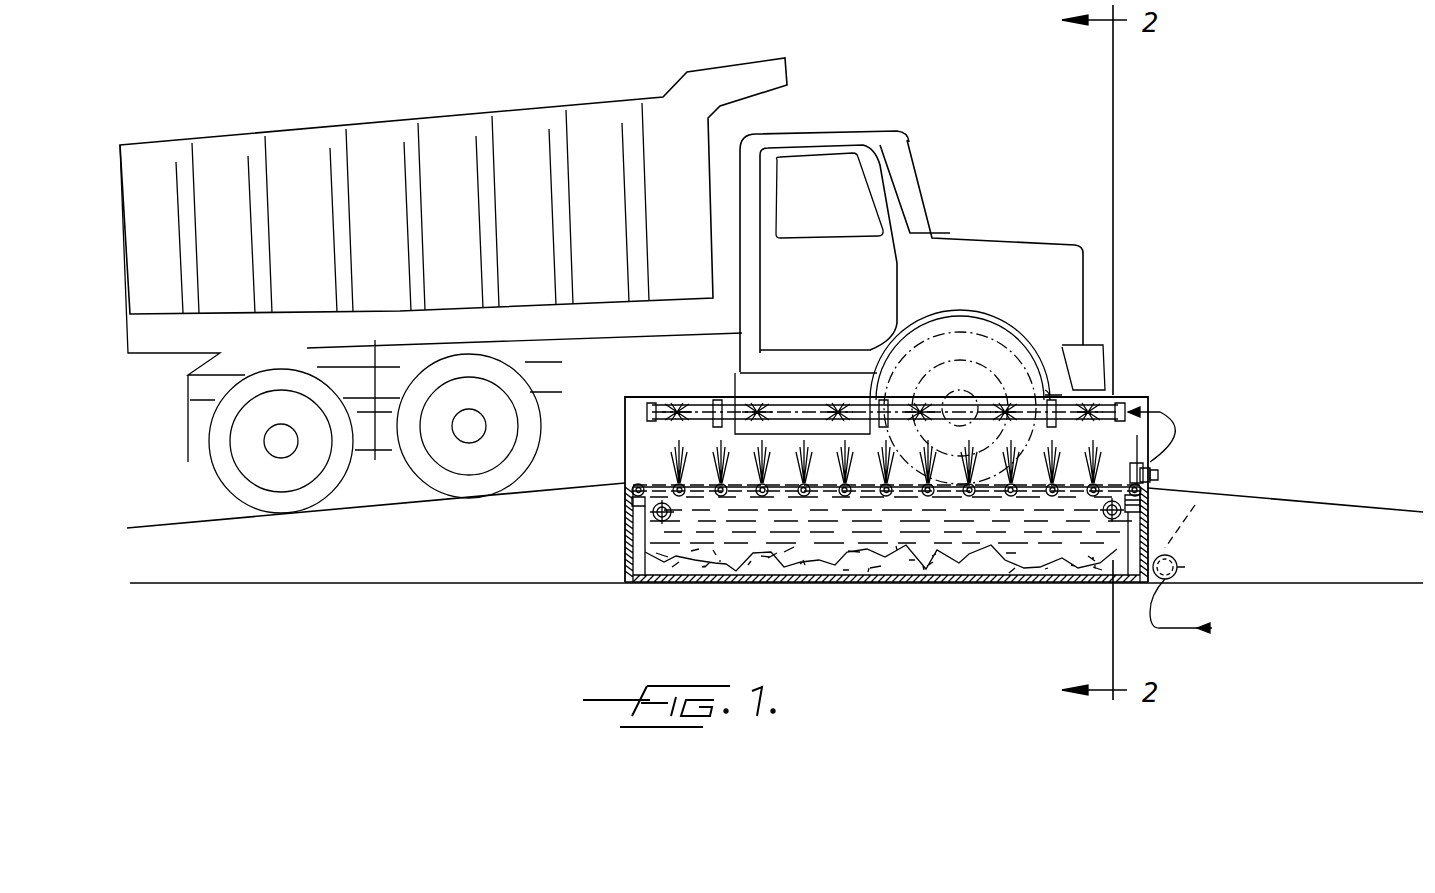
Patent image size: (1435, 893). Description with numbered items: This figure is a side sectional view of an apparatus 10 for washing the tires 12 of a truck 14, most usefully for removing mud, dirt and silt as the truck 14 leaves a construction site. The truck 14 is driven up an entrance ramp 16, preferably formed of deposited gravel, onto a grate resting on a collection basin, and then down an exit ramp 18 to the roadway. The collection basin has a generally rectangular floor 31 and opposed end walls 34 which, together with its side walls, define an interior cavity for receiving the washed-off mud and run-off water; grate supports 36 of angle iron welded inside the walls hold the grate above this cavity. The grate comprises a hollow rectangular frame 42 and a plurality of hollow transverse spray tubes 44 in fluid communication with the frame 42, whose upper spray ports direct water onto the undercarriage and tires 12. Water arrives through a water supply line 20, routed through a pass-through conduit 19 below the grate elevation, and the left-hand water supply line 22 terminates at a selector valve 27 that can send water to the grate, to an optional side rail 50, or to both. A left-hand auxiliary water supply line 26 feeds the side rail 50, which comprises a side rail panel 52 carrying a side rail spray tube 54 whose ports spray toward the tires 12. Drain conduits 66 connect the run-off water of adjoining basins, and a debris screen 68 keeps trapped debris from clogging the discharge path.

The apparatus 10 is at (1177, 295).
The tires 12 is at (285, 512).
The truck 14 is at (432, 117).
The entrance ramp 16 is at (195, 522).
The exit ramp 18 is at (1362, 505).
The pass-through conduit 19 is at (1175, 562).
The water supply line 20 is at (1210, 630).
The left-hand water supply line 22 is at (1160, 475).
The left-hand auxiliary water supply line 26 is at (1172, 412).
The selector valve 27 is at (1152, 463).
The floor 31 is at (700, 583).
The end walls 34 is at (625, 533).
The grate supports 36 is at (630, 500).
The frame 42 is at (790, 497).
The spray tubes 44 is at (923, 495).
The side rail 50 is at (905, 459).
The side rail panel 52 is at (625, 440).
The side rail spray tube 54 is at (812, 404).
The drain conduits 66 is at (667, 517).
The debris screen 68 is at (1101, 510).